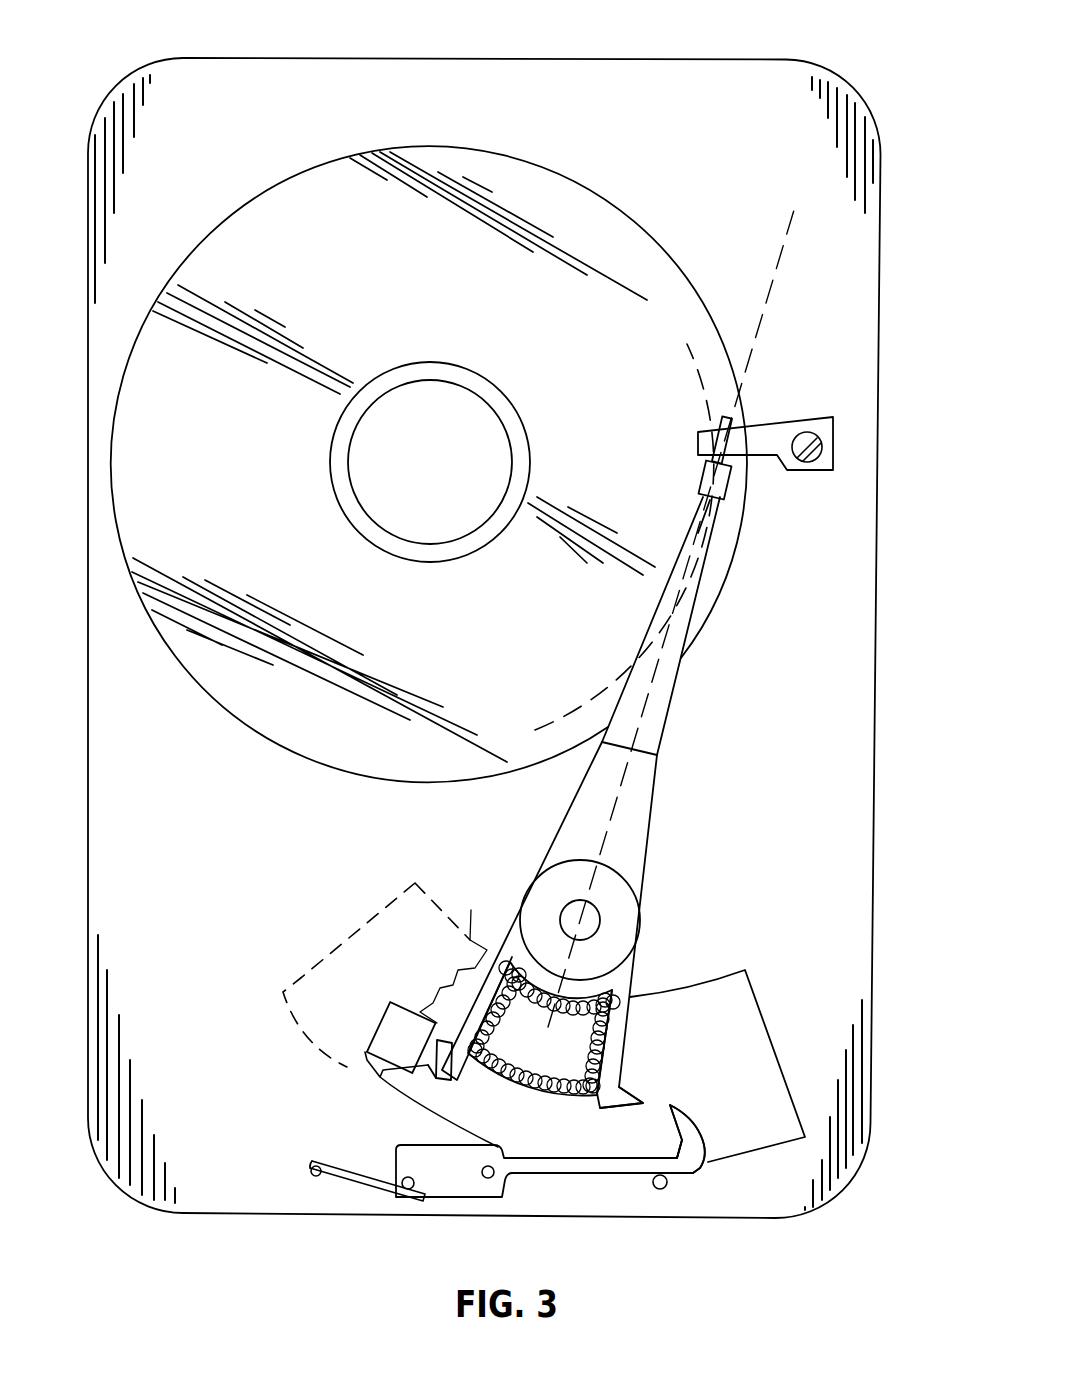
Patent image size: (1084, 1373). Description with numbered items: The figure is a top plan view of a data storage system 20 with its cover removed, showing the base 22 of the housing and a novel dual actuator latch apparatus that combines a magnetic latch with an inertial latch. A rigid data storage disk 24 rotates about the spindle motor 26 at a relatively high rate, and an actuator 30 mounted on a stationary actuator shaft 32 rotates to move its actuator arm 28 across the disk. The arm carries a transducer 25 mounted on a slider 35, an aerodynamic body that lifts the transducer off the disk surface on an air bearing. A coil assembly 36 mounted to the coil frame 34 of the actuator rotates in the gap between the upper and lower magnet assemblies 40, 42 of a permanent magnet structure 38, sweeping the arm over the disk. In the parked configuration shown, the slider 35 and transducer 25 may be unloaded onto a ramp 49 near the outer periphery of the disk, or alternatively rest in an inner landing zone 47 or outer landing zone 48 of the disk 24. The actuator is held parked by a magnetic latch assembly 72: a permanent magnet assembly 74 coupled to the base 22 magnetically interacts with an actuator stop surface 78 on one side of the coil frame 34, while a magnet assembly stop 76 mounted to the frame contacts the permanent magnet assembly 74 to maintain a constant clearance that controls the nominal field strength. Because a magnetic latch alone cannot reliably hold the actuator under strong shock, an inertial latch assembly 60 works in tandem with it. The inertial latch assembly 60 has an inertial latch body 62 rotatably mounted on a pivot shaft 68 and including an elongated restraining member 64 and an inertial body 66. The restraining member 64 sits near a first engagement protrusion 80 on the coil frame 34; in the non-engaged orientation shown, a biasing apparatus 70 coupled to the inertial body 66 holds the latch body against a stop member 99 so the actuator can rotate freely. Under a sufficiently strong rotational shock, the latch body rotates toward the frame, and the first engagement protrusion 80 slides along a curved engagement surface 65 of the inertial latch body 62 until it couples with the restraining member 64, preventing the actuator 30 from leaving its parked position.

The data storage system 20 is at (751, 58).
The base 22 is at (878, 237).
The data storage disk 24 is at (363, 261).
The transducer 25 is at (698, 467).
The spindle motor 26 is at (434, 506).
The actuator arm 28 is at (667, 720).
The actuator 30 is at (641, 922).
The actuator shaft 32 is at (592, 914).
The coil frame 34 is at (648, 1016).
The slider 35 is at (728, 484).
The coil assembly 36 is at (510, 1080).
The permanent magnet structure 38 is at (752, 980).
The upper magnet assembly 40 is at (302, 977).
The lower magnet assembly 42 is at (761, 1069).
The inner landing zone 47 is at (478, 381).
The outer landing zone 48 is at (715, 356).
The ramp 49 is at (803, 425).
The inertial latch assembly 60 is at (527, 1175).
The inertial latch body 62 is at (627, 1175).
The restraining member 64 is at (686, 1128).
The curved engagement surface 65 is at (678, 1137).
The inertial body 66 is at (453, 1180).
The pivot shaft 68 is at (500, 1160).
The biasing apparatus 70 is at (362, 1172).
The magnetic latch assembly 72 is at (413, 1001).
The permanent magnet assembly 74 is at (365, 1058).
The magnet assembly stop 76 is at (427, 1068).
The actuator stop surface 78 is at (446, 1039).
The first engagement protrusion 80 is at (628, 1094).
The stop member 99 is at (668, 1183).